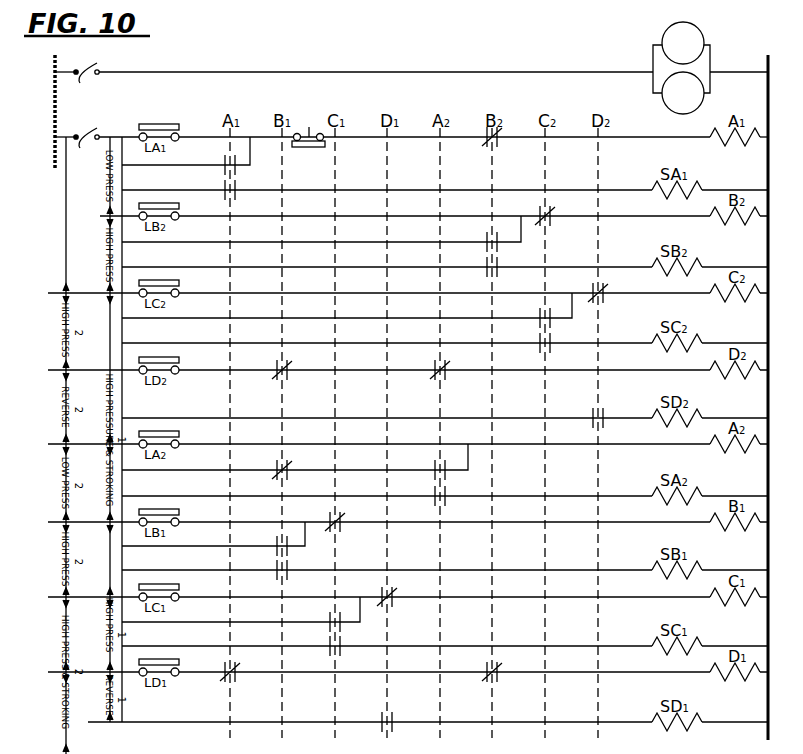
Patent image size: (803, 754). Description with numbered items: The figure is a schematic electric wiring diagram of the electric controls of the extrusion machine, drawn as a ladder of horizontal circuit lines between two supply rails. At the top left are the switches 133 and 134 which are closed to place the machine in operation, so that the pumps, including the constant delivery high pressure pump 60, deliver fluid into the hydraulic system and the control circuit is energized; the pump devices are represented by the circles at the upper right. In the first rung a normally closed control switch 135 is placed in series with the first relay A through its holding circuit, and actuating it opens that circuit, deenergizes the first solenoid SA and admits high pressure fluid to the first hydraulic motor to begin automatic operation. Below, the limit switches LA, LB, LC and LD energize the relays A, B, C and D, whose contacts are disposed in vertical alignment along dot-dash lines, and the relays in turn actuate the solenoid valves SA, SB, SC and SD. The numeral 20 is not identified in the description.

The switch 134 is at (85, 81).
The switch 133 is at (78, 146).
The control switch 135 is at (309, 127).
The constant delivery high pressure pump 60 is at (704, 42).
The pressure control device 20 is at (703, 97).